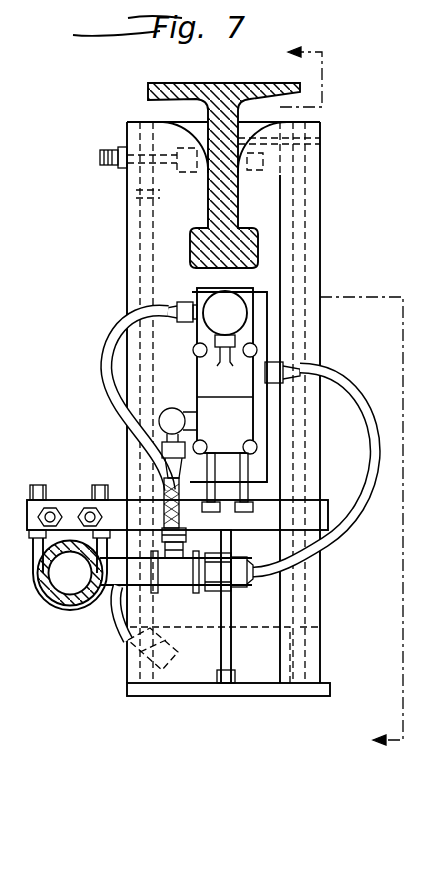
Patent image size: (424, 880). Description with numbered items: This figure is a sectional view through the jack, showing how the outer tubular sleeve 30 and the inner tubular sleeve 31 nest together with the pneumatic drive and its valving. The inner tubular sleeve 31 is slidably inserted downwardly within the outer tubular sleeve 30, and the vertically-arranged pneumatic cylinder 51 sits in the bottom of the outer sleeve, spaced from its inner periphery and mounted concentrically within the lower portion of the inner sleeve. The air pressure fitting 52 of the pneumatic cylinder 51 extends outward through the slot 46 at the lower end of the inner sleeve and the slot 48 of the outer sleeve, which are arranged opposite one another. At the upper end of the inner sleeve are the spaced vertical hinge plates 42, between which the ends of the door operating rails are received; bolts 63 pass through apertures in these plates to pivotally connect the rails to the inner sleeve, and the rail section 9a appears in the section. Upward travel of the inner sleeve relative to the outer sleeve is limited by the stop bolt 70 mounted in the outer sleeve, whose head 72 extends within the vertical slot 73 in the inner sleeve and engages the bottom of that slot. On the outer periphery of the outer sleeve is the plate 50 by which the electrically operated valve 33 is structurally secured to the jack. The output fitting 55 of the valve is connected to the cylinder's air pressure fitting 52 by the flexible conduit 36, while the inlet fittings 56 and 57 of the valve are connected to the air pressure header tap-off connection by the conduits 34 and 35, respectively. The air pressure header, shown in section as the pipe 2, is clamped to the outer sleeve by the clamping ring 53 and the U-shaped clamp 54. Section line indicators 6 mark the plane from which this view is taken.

The rail 9a is at (215, 97).
The inner tubular sleeve 31 is at (257, 124).
The section line 6 is at (351, 402).
The vertical hinge plates 42 is at (200, 128).
The head of bolt 72 is at (128, 139).
The stop bolt 70 is at (100, 157).
The bolts 63 is at (180, 169).
The vertical slot 73 is at (150, 198).
The plate 50 is at (267, 311).
The inlet fitting 57 is at (172, 298).
The inlet fitting 56 is at (283, 368).
The conduit 35 is at (104, 358).
The electrically operated valve 33 is at (238, 426).
The output fitting 55 is at (160, 424).
The clamping ring 53 is at (278, 500).
The flexible conduit 36 is at (145, 556).
The conduit 34 is at (330, 540).
The pipe 2 is at (40, 560).
The outer tubular sleeve 30 is at (268, 596).
The U-shaped clamp 54 is at (62, 598).
The pneumatic cylinder 51 is at (300, 628).
The slot 46 is at (132, 627).
The slot 48 is at (132, 650).
The air pressure fitting 52 is at (128, 681).